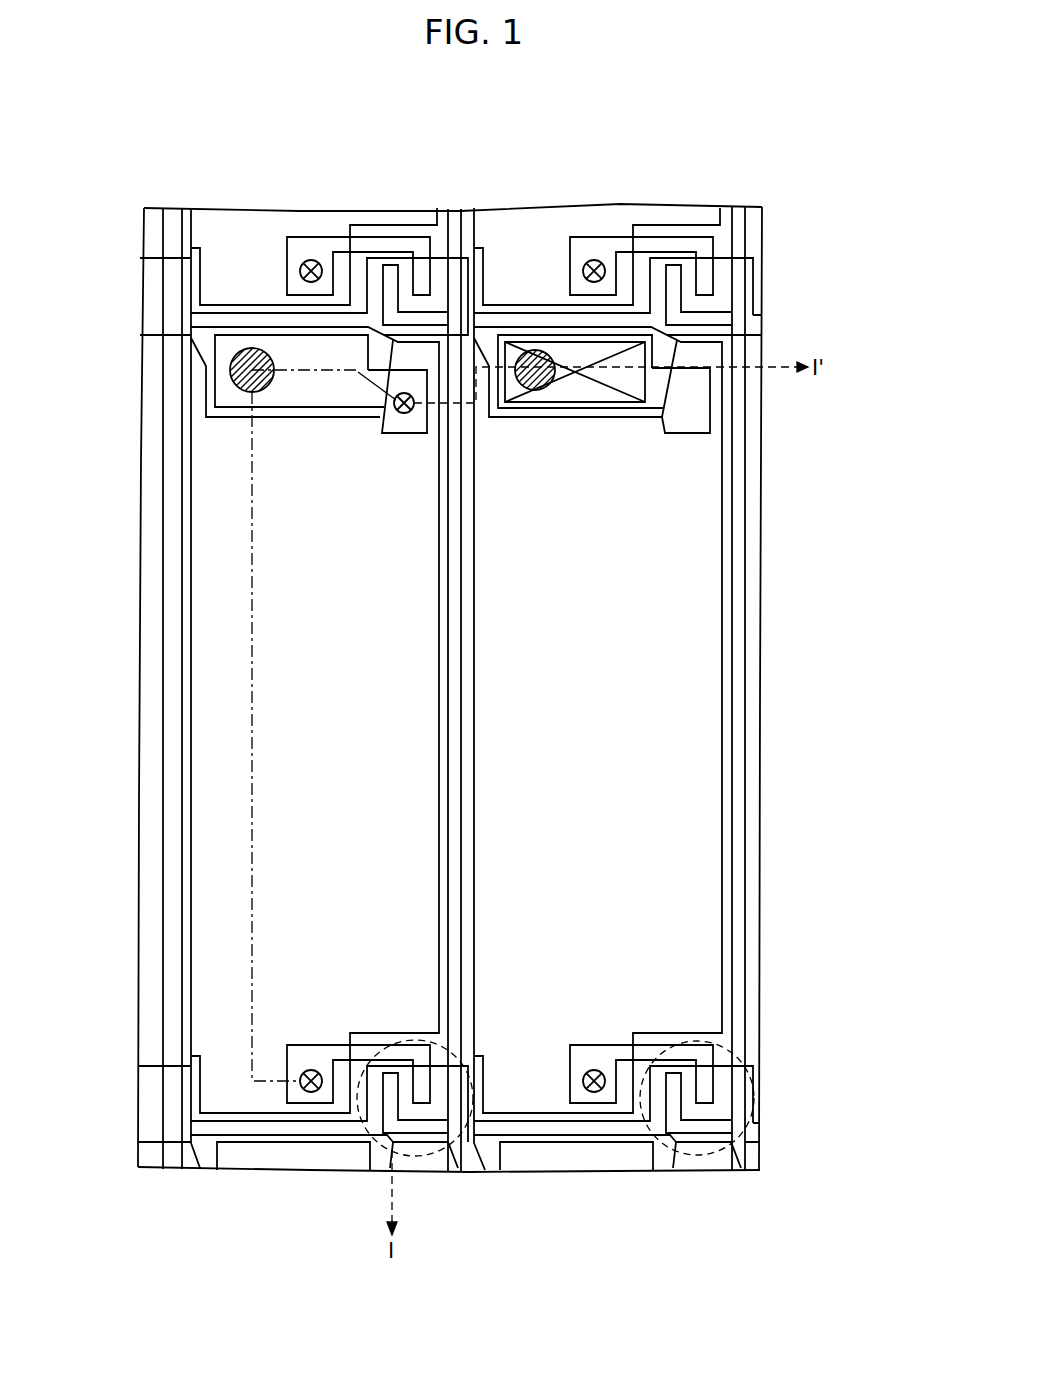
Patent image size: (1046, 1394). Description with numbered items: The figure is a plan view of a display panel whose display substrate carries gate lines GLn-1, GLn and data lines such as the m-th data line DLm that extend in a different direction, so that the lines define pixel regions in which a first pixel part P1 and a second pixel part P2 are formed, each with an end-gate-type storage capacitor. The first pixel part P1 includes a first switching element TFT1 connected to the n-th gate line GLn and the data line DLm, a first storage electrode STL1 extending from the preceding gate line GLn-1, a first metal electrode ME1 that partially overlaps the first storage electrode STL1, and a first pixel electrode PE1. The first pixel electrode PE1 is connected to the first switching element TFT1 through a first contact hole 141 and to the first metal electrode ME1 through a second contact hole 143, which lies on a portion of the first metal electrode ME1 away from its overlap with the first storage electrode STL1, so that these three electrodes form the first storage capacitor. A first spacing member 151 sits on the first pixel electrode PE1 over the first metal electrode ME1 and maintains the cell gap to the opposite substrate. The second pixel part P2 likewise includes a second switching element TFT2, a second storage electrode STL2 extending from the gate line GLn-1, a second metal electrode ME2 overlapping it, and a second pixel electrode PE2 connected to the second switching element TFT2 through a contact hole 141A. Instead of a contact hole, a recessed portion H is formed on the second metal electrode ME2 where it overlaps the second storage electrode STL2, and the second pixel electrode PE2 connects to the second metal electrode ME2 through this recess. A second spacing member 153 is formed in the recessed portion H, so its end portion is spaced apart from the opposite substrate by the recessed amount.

The first pixel electrode PE1 is at (189, 638).
The second pixel electrode PE2 is at (725, 645).
The (n-1)-th gate line GLn-1 is at (755, 323).
The n-th gate line GLn is at (760, 1135).
The first switching element TFT1 is at (410, 1158).
The second switching element TFT2 is at (693, 1160).
The first contact hole 141 is at (307, 1094).
The contact hole 141A is at (592, 1094).
The second contact hole 143 is at (404, 414).
The first spacing member 151 is at (243, 392).
The second spacing member 153 is at (537, 385).
The m-th data line DLm is at (458, 1170).
The first metal electrode ME1 is at (205, 357).
The second metal electrode ME2 is at (680, 435).
The first storage electrode STL1 is at (206, 393).
The second storage electrode STL2 is at (618, 410).
The recessed portion H is at (522, 403).
The first pixel part P1 is at (331, 626).
The second pixel part P2 is at (604, 626).